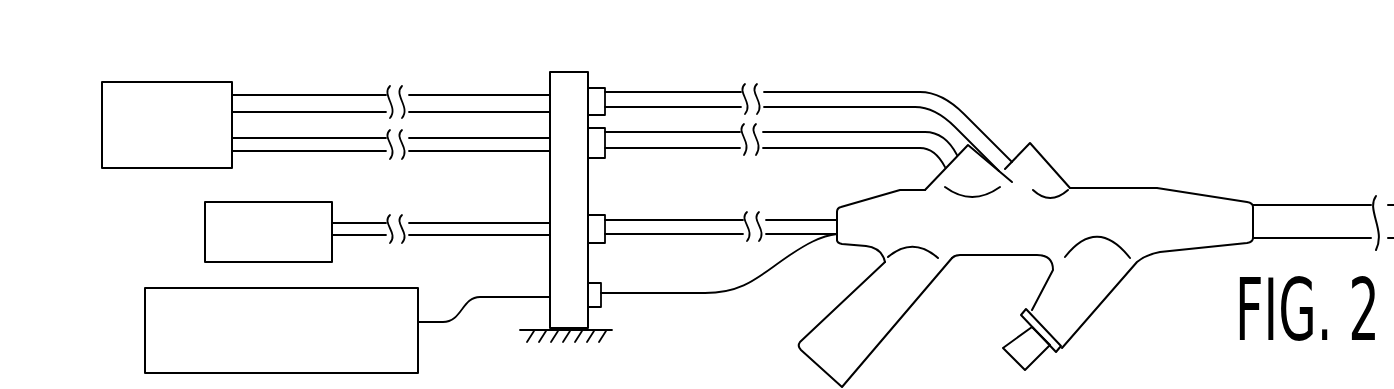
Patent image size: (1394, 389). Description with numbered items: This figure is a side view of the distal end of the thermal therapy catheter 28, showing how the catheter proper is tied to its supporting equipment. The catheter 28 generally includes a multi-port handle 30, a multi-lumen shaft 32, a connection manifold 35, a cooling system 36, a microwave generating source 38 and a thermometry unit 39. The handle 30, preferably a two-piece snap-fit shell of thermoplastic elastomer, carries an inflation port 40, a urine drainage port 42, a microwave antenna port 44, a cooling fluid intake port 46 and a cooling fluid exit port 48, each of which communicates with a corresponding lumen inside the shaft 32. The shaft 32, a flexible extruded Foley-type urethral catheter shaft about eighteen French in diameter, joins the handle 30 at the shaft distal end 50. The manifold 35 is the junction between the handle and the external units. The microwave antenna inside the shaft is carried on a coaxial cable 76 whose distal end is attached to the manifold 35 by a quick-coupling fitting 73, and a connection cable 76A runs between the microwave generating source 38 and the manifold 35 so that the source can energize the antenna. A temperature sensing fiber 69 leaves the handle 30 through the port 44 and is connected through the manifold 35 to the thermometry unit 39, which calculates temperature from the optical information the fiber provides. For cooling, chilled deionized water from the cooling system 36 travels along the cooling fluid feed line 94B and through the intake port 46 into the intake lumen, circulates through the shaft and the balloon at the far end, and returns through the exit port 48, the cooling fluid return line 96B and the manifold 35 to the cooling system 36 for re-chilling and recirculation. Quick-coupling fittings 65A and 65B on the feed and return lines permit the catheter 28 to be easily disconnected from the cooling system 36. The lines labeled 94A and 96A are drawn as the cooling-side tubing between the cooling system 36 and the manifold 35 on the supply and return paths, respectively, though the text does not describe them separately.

The catheter 28 is at (1075, 133).
The multi-port handle 30 is at (1108, 188).
The multi-lumen shaft 32 is at (1327, 212).
The connection manifold 35 is at (565, 72).
The cooling system 36 is at (133, 169).
The microwave generating source 38 is at (205, 237).
The thermometry unit 39 is at (418, 343).
The inflation port 40 is at (1003, 358).
The urine drainage port 42 is at (812, 330).
The microwave antenna port 44 is at (833, 238).
The cooling fluid intake port 46 is at (1028, 141).
The cooling fluid exit port 48 is at (936, 177).
The shaft distal end 50 is at (1272, 204).
The quick-coupling fitting 65A is at (596, 88).
The quick-coupling fitting 65B is at (610, 128).
The temperature sensing fiber 69 is at (650, 294).
The quick-coupling fitting 73 is at (597, 243).
The coaxial cable 76 is at (746, 237).
The connection cable 76A is at (525, 236).
The cooling fluid supply line 94A is at (525, 56).
The cooling fluid feed line 94B is at (647, 91).
The cooling fluid return line 96A is at (476, 146).
The cooling fluid return line 96B is at (660, 150).